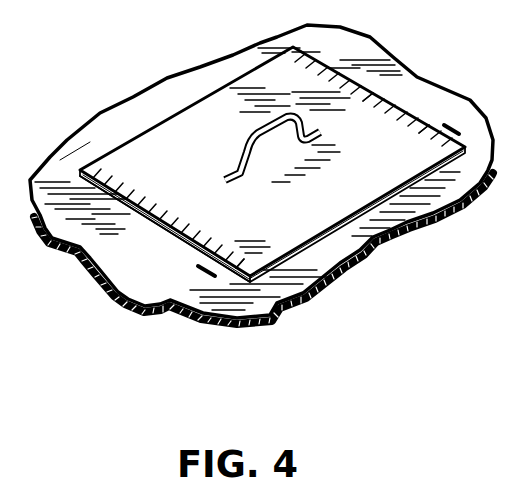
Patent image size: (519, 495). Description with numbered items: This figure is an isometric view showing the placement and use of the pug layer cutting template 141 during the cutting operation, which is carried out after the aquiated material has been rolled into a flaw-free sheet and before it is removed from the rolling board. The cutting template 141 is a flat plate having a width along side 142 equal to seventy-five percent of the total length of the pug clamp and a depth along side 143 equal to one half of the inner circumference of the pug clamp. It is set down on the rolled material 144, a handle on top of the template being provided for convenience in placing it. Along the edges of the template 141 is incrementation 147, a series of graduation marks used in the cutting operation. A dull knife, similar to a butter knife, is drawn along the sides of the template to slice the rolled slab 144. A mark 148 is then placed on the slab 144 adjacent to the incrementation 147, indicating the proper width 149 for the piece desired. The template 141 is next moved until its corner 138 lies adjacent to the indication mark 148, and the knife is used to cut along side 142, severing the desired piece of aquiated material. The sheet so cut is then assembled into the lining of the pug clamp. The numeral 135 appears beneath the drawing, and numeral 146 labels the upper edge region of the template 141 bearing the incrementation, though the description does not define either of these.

The base slab 135 is at (237, 411).
The corner 138 is at (82, 168).
The cutting template 141 is at (188, 151).
The side 142 is at (172, 117).
The side 143 is at (183, 240).
The rolled material 144 is at (113, 151).
The plate edge 146 is at (328, 64).
The incrementation 147 is at (148, 205).
The mark 148 is at (198, 268).
The width 149 is at (250, 236).